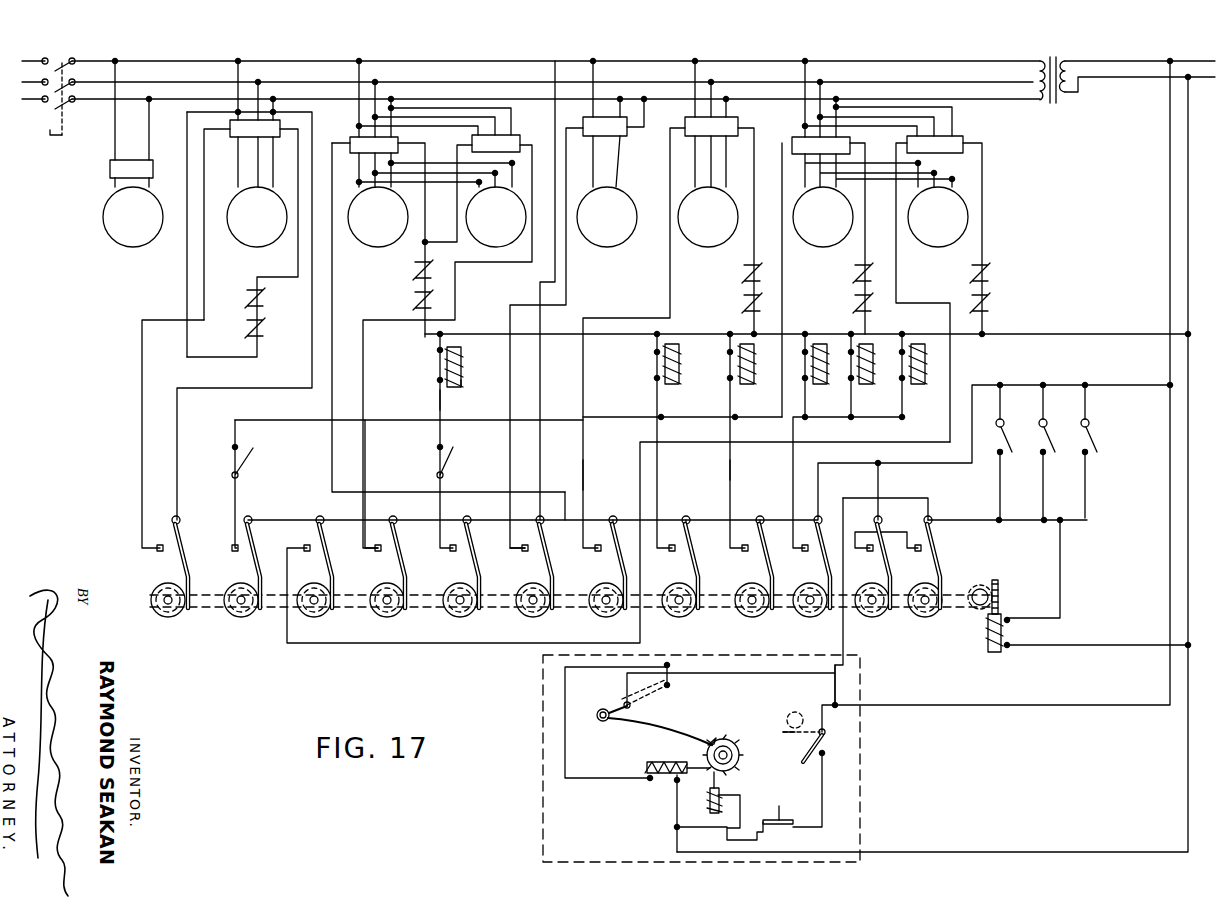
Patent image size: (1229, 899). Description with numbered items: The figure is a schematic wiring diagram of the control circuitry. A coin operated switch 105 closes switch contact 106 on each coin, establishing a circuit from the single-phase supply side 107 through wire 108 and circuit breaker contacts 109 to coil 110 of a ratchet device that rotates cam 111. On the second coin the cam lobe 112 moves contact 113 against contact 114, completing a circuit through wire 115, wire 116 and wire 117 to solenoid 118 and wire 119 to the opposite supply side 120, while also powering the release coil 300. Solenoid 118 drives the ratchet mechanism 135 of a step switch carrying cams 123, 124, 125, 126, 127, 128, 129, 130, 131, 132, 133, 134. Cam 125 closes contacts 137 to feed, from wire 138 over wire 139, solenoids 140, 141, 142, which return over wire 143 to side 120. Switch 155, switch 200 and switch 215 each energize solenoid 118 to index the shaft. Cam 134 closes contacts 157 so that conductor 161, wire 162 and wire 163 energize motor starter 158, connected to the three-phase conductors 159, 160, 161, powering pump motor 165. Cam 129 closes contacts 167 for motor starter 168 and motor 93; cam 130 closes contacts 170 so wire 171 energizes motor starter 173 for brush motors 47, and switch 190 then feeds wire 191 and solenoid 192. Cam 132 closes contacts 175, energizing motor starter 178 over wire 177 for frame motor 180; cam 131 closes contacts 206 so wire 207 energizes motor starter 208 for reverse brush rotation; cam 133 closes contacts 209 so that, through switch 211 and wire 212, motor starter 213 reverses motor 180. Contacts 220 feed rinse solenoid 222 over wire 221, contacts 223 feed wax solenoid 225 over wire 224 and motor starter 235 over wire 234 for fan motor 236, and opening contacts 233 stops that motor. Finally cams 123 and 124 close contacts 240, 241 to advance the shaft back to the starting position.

The conductor 160 is at (196, 80).
The conductor 159 is at (286, 60).
The conductor 161 is at (147, 109).
The motor starter 158 is at (238, 130).
The motor 165 is at (257, 192).
The motor starter 173 is at (352, 140).
The brush motor 47 is at (437, 203).
The motor starter 208 is at (518, 140).
The motor starter 168 is at (621, 134).
The motor 93 is at (607, 191).
The motor starter 235 is at (736, 130).
The motor 236 is at (708, 191).
The motor starter 213 is at (844, 148).
The motor starter 178 is at (960, 142).
The motor 180 is at (880, 200).
The opposite side of the supply 120 is at (1190, 230).
The wire 162 is at (312, 335).
The wire 163 is at (142, 356).
The wire 207 is at (366, 320).
The wire 212 is at (292, 420).
The switch 211 is at (254, 452).
The wire 171 is at (332, 473).
The switch 190 is at (452, 466).
The wire 191 is at (440, 400).
The solenoid 192 is at (462, 378).
The wire 143 is at (1093, 333).
The solenoid 140 is at (815, 346).
The solenoid 141 is at (870, 350).
The solenoid 142 is at (926, 365).
The solenoid 225 is at (663, 362).
The solenoid 222 is at (738, 362).
The wire 224 is at (657, 398).
The wire 221 is at (730, 470).
The wire 234 is at (584, 476).
The wire 139 is at (793, 456).
The wire 177 is at (850, 442).
The wire 138 is at (668, 518).
The switch 200 is at (1002, 442).
The switch 215 is at (1052, 448).
The switch 155 is at (1092, 440).
The wire 116 is at (978, 518).
The wire 117 is at (1060, 576).
The solenoid 118 is at (988, 650).
The wire 119 is at (1120, 645).
The single-phase supply side 107 is at (1170, 546).
The ratchet mechanism 135 is at (994, 577).
The wire 115 is at (843, 638).
The contacts 157 is at (172, 545).
The contacts 209 is at (238, 549).
The contacts 175 is at (306, 546).
The contacts 206 is at (388, 551).
The contacts 170 is at (460, 551).
The contacts 167 is at (535, 552).
The contacts 233 is at (605, 552).
The contacts 223 is at (681, 552).
The contacts 220 is at (757, 550).
The contacts 137 is at (816, 552).
The contacts 240 is at (876, 549).
The contacts 241 is at (921, 549).
The cam 134 is at (160, 612).
The cam 133 is at (240, 612).
The cam 132 is at (316, 612).
The cam 131 is at (389, 612).
The cam 130 is at (461, 612).
The cam 129 is at (535, 612).
The cam 128 is at (608, 612).
The cam 127 is at (681, 612).
The cam 126 is at (754, 612).
The cam 125 is at (812, 612).
The cam 124 is at (880, 608).
The cam 123 is at (925, 617).
The coin operated switch 105 is at (874, 791).
The switch contact 106 is at (832, 736).
The wire 108 is at (822, 806).
The circuit breaker contacts 109 is at (790, 830).
The coil 110 is at (708, 800).
The cam 111 is at (732, 745).
The cam lobe 112 is at (706, 749).
The contact 113 is at (670, 709).
The contact 114 is at (672, 686).
The release coil 300 is at (648, 762).